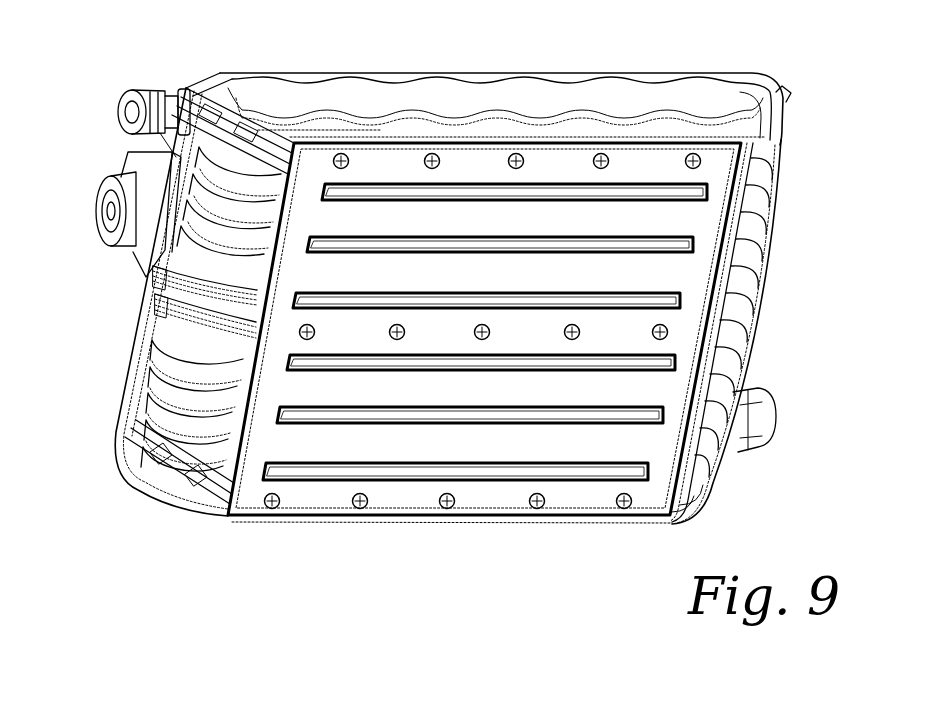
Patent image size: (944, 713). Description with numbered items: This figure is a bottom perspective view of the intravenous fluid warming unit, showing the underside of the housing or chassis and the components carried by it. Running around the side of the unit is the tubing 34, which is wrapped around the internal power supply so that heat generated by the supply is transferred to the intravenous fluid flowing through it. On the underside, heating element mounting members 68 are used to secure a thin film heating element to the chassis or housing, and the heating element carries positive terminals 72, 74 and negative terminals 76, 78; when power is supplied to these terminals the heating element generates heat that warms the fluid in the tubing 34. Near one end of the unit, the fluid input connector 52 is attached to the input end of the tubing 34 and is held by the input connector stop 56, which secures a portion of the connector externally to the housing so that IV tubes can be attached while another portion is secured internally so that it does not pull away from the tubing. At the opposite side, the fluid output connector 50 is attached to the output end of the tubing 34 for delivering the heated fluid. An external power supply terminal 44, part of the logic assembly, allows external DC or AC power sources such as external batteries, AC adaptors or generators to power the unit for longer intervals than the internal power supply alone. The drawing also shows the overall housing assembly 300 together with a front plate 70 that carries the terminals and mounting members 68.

The cover / top pan 300 is at (590, 95).
The tubing 34 is at (746, 226).
The negative terminal 76 is at (776, 168).
The negative terminal 78 is at (702, 478).
The front plate 70 is at (403, 500).
The positive terminal 72 is at (680, 302).
The positive terminal 74 is at (676, 364).
The heating element mounting member 68 is at (268, 518).
The fluid output connector 50 is at (752, 418).
The fluid input connector 52 is at (157, 97).
The input connector stop 56 is at (178, 86).
The external power supply terminal 44 is at (100, 192).